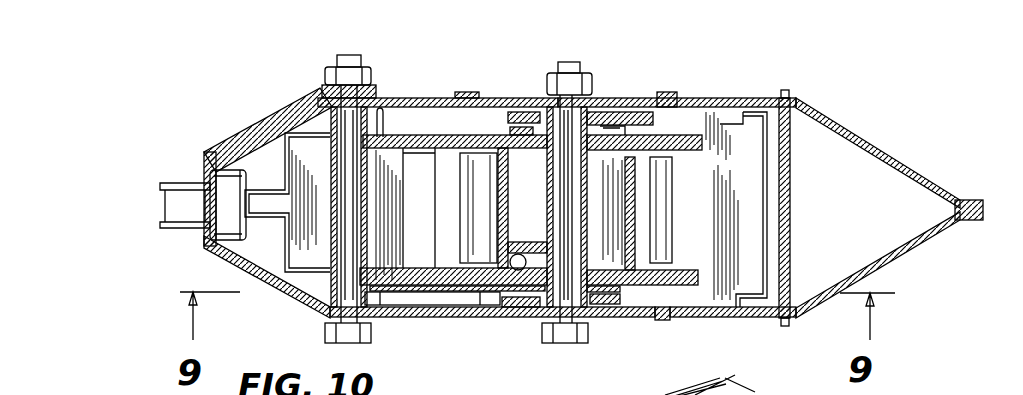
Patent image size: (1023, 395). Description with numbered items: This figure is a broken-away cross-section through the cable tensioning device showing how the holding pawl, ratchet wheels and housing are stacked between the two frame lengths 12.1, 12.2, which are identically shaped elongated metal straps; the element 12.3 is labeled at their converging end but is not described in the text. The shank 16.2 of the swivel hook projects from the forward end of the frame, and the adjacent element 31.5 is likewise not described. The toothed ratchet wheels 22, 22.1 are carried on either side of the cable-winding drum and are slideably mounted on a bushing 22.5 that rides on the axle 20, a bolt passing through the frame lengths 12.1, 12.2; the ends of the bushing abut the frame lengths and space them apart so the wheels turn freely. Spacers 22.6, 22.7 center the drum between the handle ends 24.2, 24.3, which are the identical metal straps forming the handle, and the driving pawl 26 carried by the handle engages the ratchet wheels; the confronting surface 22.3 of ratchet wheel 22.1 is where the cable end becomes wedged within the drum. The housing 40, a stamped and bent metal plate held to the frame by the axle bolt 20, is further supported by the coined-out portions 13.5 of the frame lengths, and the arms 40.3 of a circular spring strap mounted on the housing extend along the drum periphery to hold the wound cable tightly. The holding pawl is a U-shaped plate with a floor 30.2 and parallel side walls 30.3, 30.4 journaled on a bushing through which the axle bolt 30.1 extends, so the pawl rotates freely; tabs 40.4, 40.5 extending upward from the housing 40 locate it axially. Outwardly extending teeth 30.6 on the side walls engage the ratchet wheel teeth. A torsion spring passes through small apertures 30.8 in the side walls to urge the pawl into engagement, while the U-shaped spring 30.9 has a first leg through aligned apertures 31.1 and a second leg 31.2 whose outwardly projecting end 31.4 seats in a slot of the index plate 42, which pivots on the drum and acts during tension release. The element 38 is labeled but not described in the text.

The shank 16.2 is at (172, 206).
The nozzle lip 31.5 is at (262, 178).
The side wall 30.4 is at (335, 112).
The side wall 30.3 is at (306, 298).
The axle 30.1 is at (348, 105).
The floor 30.2 is at (332, 314).
The U-shaped spring 30.9 is at (400, 135).
The tab 40.5 is at (382, 125).
The arms 40.3 is at (728, 112).
The tab 40.4 is at (402, 300).
The coined-out portions 13.5 is at (662, 322).
The axle 20 is at (600, 110).
The spacer 22.6 is at (552, 110).
The spacer 22.7 is at (535, 290).
The toothed ratchet wheel 22.1 is at (508, 128).
The handle strap 24.2 is at (652, 120).
The bushing 22.5 is at (622, 115).
The second leg 31.2 is at (435, 150).
The housing 40 is at (755, 278).
The end wall 38 is at (792, 180).
The frame length 12.2 is at (822, 115).
The frame length 12.1 is at (812, 312).
The cone tip 12.3 is at (984, 218).
The toothed ratchet wheel 22 is at (516, 287).
The handle strap 24.3 is at (612, 282).
The confronting surface 22.3 is at (600, 318).
The outwardly projecting end 31.4 is at (403, 292).
The teeth 30.6 is at (425, 302).
The index plate 42 is at (492, 306).
The apertures 30.8 is at (624, 388).
The apertures 31.1 is at (668, 390).
The driving pawl 26 is at (710, 379).